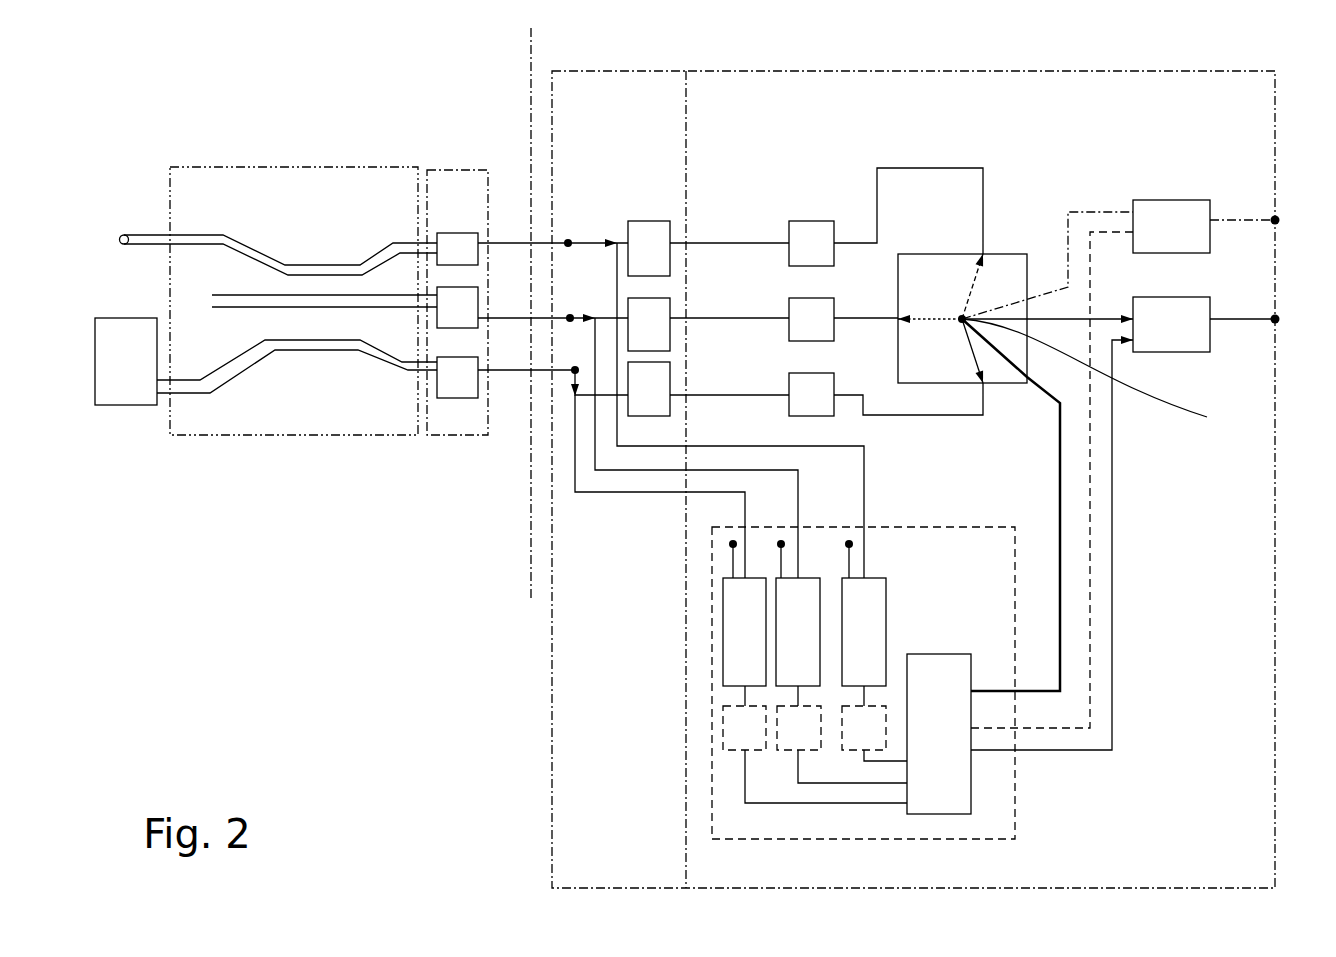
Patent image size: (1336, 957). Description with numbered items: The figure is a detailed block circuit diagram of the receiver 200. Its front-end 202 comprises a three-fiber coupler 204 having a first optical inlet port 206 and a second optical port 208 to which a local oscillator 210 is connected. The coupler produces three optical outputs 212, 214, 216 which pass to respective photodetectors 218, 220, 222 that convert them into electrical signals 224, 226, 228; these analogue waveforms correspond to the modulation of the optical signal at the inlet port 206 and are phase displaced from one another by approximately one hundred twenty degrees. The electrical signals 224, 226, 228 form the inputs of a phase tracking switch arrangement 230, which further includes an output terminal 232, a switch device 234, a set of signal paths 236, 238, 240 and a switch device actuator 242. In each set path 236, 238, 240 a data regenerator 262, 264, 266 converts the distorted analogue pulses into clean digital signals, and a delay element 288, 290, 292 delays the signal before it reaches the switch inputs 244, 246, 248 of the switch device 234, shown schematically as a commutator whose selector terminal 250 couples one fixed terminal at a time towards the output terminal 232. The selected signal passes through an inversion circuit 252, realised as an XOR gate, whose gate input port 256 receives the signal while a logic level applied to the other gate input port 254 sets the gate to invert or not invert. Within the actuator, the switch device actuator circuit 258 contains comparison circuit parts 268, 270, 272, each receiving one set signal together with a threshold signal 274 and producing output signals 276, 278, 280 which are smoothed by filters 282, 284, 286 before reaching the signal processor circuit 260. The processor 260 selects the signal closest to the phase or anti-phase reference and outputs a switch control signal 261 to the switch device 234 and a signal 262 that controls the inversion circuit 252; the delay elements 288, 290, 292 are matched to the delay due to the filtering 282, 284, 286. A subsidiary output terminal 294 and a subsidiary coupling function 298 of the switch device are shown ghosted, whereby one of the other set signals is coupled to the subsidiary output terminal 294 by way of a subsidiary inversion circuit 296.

The receiver 200 is at (238, 712).
The front-end 202 is at (223, 167).
The three-fiber coupler 204 is at (293, 382).
The first optical inlet port 206 is at (150, 234).
The second optical port 208 is at (155, 407).
The local oscillator 210 is at (126, 361).
The first optical output 212 is at (418, 172).
The second optical output 214 is at (412, 308).
The third optical output 216 is at (373, 357).
The first photodetector 218 is at (532, 249).
The second photodetector 220 is at (532, 307).
The third photodetector 222 is at (532, 377).
The first electrical signal input 224 is at (513, 243).
The second electrical signal input 226 is at (515, 319).
The third electrical signal input 228 is at (490, 372).
The phase tracking switch arrangement 230 is at (955, 50).
The output terminal 232 is at (1273, 319).
The switch device 234 is at (1010, 253).
The first set path 236 is at (703, 242).
The second set path 238 is at (703, 317).
The third set path 240 is at (703, 393).
The switch device actuator 242 is at (1015, 801).
The first switch input 244 is at (983, 252).
The second switch input 246 is at (897, 313).
The third switch input 248 is at (983, 385).
The selector terminal 250 is at (1113, 376).
The inversion circuit 252 is at (1086, 324).
The logic level gate input port 254 is at (1128, 312).
The signal gate input port 256 is at (1128, 342).
The switch device actuator circuit 258 is at (710, 821).
The signal processor circuit 260 is at (939, 734).
The switch control signal 261 is at (1056, 494).
The first data regenerator 262 is at (1120, 520).
The second data regenerator 264 is at (649, 324).
The third data regenerator 266 is at (649, 389).
The first comparison circuit part 268 is at (670, 540).
The second comparison circuit part 270 is at (707, 502).
The third comparison circuit part 272 is at (751, 464).
The threshold signal 274 is at (723, 567).
The first comparison output signal 276 is at (745, 697).
The second comparison output signal 278 is at (798, 700).
The third comparison output signal 280 is at (862, 691).
The first filter 282 is at (723, 728).
The second filter 284 is at (792, 752).
The third filter 286 is at (884, 708).
The first delay element 288 is at (811, 243).
The second delay element 290 is at (843, 319).
The third delay element 292 is at (811, 394).
The subsidiary output terminal 294 is at (1220, 220).
The subsidiary inversion circuit 296 is at (1160, 200).
The subsidiary coupling function 298 is at (1102, 210).